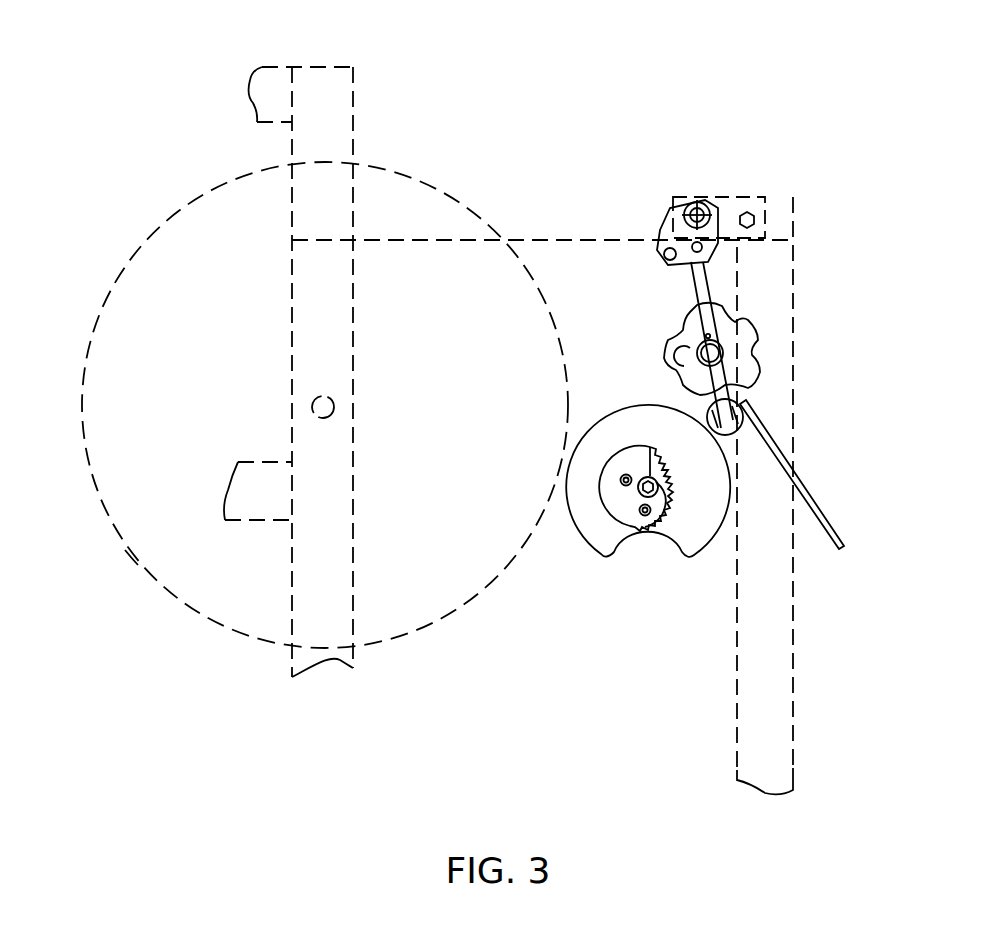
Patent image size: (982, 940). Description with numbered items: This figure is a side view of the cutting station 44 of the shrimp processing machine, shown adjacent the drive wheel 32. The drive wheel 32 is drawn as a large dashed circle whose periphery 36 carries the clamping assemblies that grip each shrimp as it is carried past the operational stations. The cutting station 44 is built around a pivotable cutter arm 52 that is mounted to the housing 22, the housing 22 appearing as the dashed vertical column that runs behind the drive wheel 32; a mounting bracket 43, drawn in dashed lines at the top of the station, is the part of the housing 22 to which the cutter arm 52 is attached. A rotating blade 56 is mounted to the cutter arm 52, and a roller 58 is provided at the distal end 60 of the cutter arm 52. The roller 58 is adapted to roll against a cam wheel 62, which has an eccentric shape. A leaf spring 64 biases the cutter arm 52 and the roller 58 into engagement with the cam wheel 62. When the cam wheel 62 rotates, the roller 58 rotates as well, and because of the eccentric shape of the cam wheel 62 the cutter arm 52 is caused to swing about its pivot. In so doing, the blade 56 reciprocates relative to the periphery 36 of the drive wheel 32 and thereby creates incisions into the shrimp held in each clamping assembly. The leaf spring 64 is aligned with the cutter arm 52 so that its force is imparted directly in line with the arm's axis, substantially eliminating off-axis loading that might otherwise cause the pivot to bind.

The housing 22 is at (345, 107).
The drive wheel 32 is at (195, 587).
The periphery 36 is at (138, 565).
The mounting bracket 43 is at (700, 212).
The cutting station 44 is at (766, 79).
The cutter arm 52 is at (675, 240).
The rotating blade 56 is at (745, 345).
The roller 58 is at (722, 408).
The distal end 60 is at (736, 403).
The cam wheel 62 is at (592, 528).
The leaf spring 64 is at (828, 520).